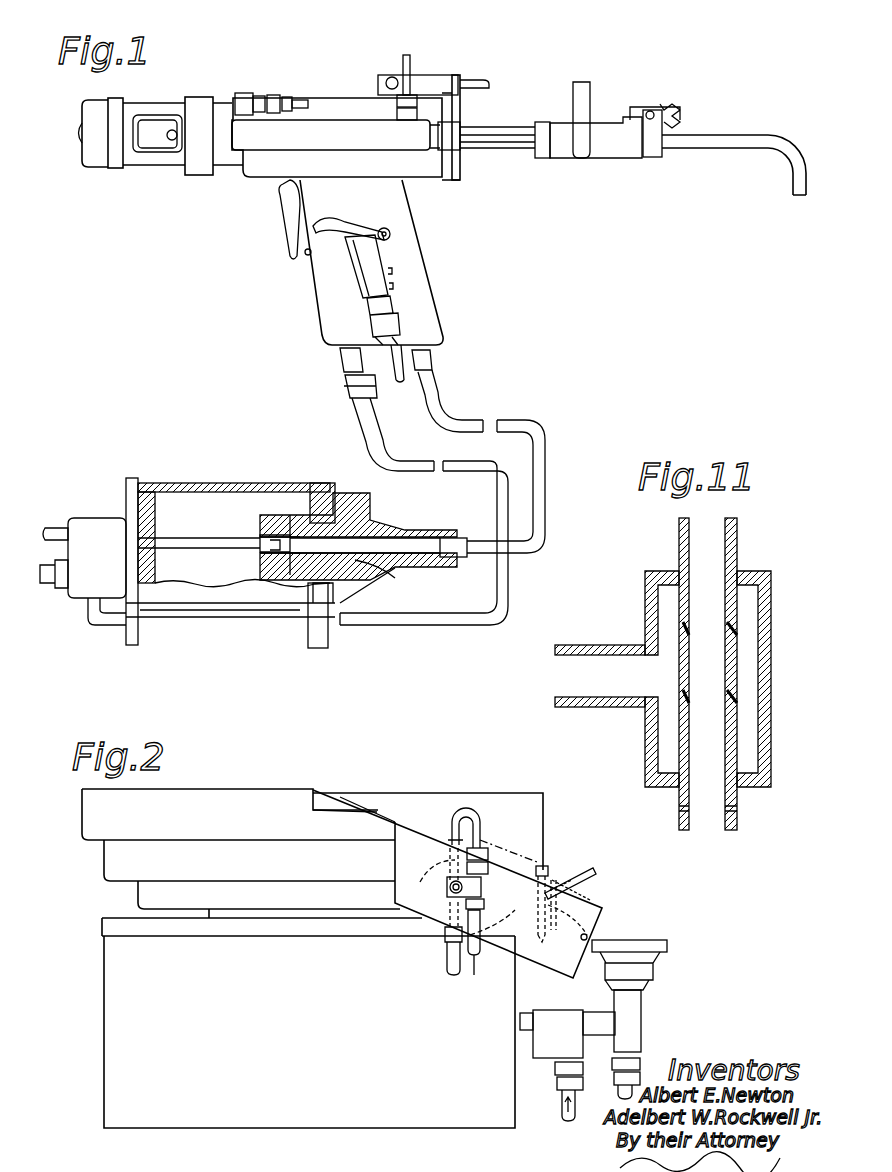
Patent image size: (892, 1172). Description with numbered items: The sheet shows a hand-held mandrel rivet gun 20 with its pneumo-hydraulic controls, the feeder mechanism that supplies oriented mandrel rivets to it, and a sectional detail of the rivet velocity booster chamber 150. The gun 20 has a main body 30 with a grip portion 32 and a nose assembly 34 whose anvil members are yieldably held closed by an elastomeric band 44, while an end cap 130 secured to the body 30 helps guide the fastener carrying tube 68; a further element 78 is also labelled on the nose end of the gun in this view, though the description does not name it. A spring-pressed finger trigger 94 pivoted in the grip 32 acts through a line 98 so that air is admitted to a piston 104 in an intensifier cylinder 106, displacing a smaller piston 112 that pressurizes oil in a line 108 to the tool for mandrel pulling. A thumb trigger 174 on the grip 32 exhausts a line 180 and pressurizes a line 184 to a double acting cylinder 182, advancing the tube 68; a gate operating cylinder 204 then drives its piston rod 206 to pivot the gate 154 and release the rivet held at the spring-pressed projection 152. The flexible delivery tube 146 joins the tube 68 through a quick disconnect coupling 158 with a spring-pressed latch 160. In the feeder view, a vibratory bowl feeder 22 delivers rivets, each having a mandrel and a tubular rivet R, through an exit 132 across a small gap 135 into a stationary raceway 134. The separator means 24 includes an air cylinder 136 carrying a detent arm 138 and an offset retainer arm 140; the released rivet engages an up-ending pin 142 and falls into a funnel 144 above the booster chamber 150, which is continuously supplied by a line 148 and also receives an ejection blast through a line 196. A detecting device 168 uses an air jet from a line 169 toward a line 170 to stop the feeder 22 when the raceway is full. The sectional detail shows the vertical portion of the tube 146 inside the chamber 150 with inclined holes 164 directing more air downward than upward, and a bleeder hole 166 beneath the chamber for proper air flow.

In FIG. 1, the hand-held mandrel rivet gun 20 is at (206, 219).
In FIG. 2, the vibratory bowl feeder 22 is at (82, 812).
In FIG. 2, the separator means 24 is at (654, 897).
In FIG. 1, the main body 30 is at (333, 97).
In FIG. 1, the grip portion 32 is at (433, 300).
In FIG. 1, the nose assembly 34 is at (73, 191).
In FIG. 1, the elastomeric band 44 is at (116, 98).
In FIG. 1, the fastener carrying tube 68 is at (484, 150).
In FIG. 1, the window 78 is at (152, 150).
In FIG. 1, the finger trigger 94 is at (283, 196).
In FIG. 1, the line 98 is at (445, 470).
In FIG. 1, the piston 104 is at (158, 526).
In FIG. 1, the intensifier cylinder 106 is at (208, 482).
In FIG. 1, the line 108 is at (497, 418).
In FIG. 1, the smaller piston 112 is at (378, 566).
In FIG. 1, the end cap 130 is at (457, 182).
In FIG. 2, the exit 132 is at (383, 815).
In FIG. 2, the stationary raceway 134 is at (512, 862).
In FIG. 2, the gap 135 is at (418, 808).
In FIG. 2, the air cylinder 136 is at (594, 872).
In FIG. 2, the detent arm 138 is at (558, 942).
In FIG. 2, the offset retainer arm 140 is at (536, 884).
In FIG. 2, the up-ending pin 142 is at (588, 938).
In FIG. 2, the funnel 144 is at (668, 948).
In FIG. 1, the flexible delivery tube 146 is at (770, 135).
In FIG. 11, the flexible delivery tube 146 is at (740, 540).
In FIG. 2, the flexible delivery tube 146 is at (638, 1095).
In FIG. 11, the line 148 is at (592, 707).
In FIG. 2, the line 148 is at (563, 1106).
In FIG. 11, the rivet velocity booster chamber 150 is at (772, 640).
In FIG. 2, the rivet velocity booster chamber 150 is at (641, 1026).
In FIG. 1, the spring-pressed projection 152 is at (550, 120).
In FIG. 1, the gate 154 is at (585, 84).
In FIG. 1, the quick disconnect coupling 158 is at (652, 158).
In FIG. 1, the spring-pressed latch 160 is at (656, 108).
In FIG. 11, the inclined holes 164 is at (730, 692).
In FIG. 11, the bleeder hole 166 is at (737, 808).
In FIG. 2, the detecting device 168 is at (500, 782).
In FIG. 2, the line 169 is at (474, 958).
In FIG. 2, the line 170 is at (447, 965).
In FIG. 1, the thumb trigger 174 is at (322, 224).
In FIG. 1, the line 180 is at (296, 99).
In FIG. 1, the double acting cylinder 182 is at (316, 152).
In FIG. 1, the line 184 is at (404, 72).
In FIG. 2, the line 196 is at (521, 1020).
In FIG. 1, the gate operating cylinder 204 is at (436, 75).
In FIG. 1, the piston rod 206 is at (488, 80).
In FIG. 2, the tubular rivet R is at (558, 880).